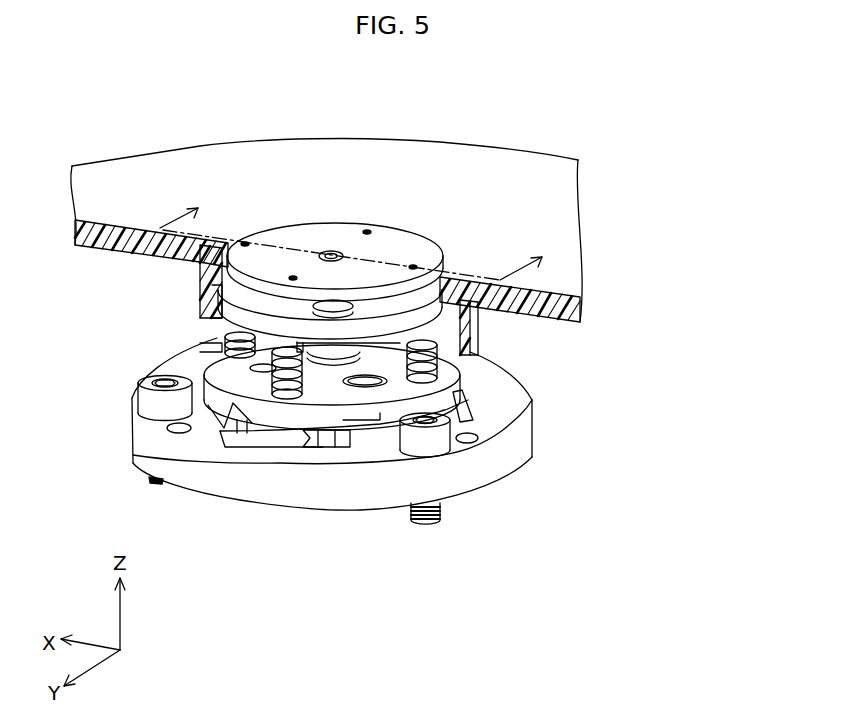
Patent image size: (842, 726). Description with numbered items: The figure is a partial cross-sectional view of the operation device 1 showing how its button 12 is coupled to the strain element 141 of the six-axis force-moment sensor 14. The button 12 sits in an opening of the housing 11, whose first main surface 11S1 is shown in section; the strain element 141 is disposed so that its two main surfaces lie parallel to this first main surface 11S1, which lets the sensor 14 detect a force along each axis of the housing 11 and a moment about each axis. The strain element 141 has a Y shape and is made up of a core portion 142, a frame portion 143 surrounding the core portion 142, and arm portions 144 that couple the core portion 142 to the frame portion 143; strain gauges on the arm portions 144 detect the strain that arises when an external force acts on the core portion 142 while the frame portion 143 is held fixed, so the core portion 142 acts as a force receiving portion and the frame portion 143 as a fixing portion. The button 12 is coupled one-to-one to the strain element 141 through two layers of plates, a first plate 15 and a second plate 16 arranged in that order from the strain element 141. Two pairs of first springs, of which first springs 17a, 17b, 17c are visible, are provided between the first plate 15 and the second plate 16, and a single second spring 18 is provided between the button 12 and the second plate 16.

The operation device 1 is at (585, 106).
The housing 11 is at (507, 158).
The first main surface 11S1 is at (229, 158).
The button 12 is at (400, 238).
The six-axis force-moment sensor 14 is at (532, 392).
The strain element 141 is at (524, 408).
The core portion 142 is at (340, 452).
The frame portion 143 is at (212, 444).
The arm portions 144 is at (280, 438).
The first plate 15 is at (381, 418).
The second plate 16 is at (250, 331).
The first spring 17a is at (228, 345).
The first spring 17b is at (290, 396).
The first spring 17c is at (434, 368).
The second spring 18 is at (215, 292).